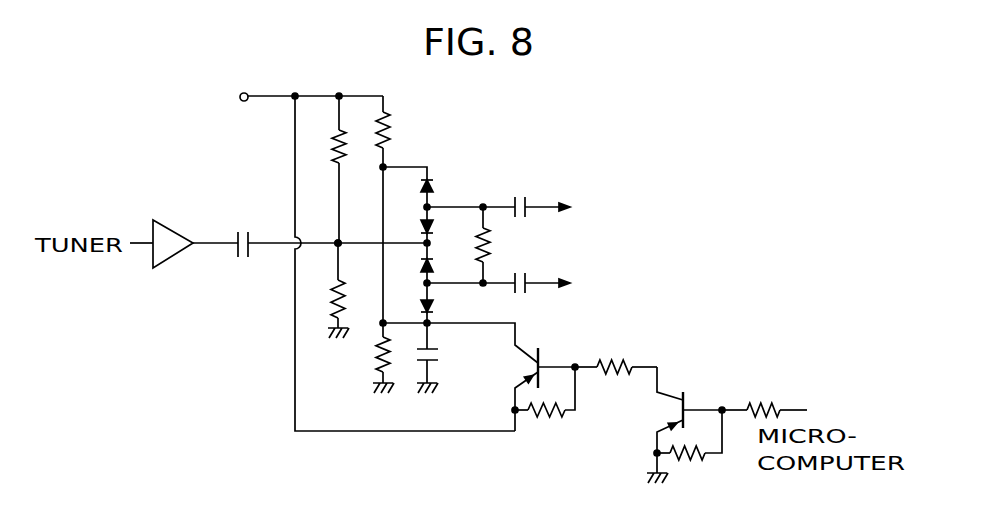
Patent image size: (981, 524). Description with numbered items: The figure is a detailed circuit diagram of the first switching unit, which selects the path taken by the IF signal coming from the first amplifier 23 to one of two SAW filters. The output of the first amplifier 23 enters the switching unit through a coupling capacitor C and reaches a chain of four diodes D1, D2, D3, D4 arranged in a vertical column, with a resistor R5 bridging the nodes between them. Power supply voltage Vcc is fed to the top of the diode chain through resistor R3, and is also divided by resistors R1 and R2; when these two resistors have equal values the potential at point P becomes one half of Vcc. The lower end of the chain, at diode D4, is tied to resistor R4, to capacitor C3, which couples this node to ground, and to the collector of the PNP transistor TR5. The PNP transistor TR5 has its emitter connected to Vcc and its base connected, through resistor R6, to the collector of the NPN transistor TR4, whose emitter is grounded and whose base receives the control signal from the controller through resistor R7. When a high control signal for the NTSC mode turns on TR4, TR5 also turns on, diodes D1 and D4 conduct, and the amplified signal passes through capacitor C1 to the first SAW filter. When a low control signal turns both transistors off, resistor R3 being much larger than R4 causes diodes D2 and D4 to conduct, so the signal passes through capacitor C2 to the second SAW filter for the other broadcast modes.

The first amplifier 23 is at (165, 225).
The coupling capacitor C is at (241, 232).
The point P is at (346, 255).
The power supply source Vcc is at (284, 96).
The resistor R1 is at (324, 169).
The resistor R2 is at (323, 290).
The resistor R3 is at (400, 131).
The resistor R4 is at (367, 358).
The resistor R5 is at (466, 245).
The resistor R6 is at (616, 353).
The resistor R7 is at (764, 396).
The diode D1 is at (410, 190).
The diode D2 is at (410, 226).
The diode D3 is at (410, 263).
The diode D4 is at (410, 303).
The capacitor C1 is at (539, 273).
The capacitor C2 is at (539, 195).
The capacitor C3 is at (443, 358).
The NPN transistor TR4 is at (669, 432).
The PNP transistor TR5 is at (533, 340).